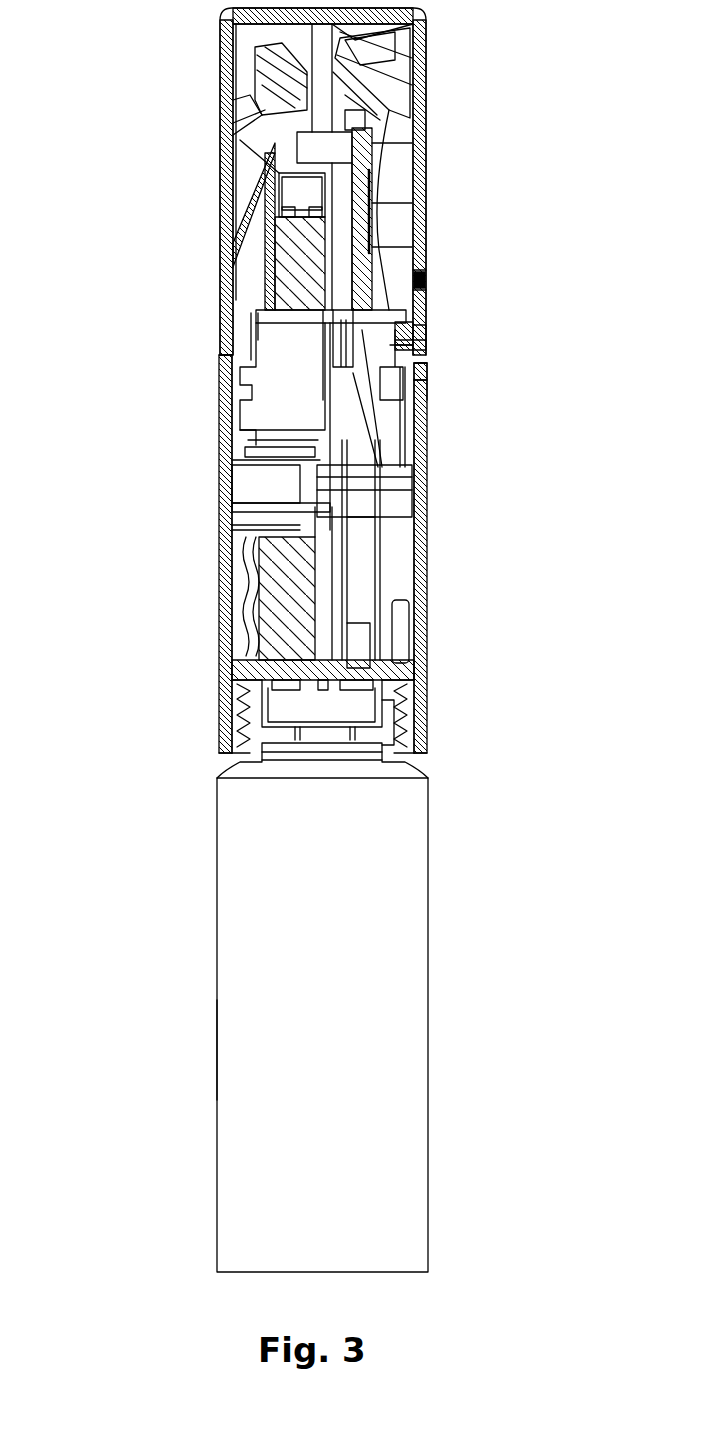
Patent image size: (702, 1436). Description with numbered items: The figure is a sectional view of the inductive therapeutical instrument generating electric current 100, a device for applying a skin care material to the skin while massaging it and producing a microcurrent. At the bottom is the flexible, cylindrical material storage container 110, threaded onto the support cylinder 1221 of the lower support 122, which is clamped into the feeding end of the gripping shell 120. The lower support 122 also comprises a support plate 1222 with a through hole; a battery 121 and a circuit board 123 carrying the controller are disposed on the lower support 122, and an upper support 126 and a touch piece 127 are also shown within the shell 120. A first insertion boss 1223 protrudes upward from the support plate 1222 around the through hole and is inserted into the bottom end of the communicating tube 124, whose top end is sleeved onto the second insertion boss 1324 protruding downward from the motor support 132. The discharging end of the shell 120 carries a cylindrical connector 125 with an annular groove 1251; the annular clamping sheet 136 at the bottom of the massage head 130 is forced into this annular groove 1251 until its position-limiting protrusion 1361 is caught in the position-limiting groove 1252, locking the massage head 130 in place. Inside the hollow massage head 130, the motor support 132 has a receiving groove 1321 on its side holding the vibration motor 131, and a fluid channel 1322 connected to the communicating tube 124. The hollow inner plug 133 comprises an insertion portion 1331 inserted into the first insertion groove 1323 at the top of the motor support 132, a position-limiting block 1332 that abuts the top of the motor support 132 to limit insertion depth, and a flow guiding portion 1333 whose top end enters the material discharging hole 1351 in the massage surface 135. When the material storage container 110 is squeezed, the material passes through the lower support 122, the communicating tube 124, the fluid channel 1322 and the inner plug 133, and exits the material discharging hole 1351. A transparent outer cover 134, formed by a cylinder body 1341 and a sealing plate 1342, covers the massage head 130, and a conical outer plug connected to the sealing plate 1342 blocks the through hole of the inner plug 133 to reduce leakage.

The inductive therapeutical instrument 100 is at (201, 1000).
The material storage container 110 is at (217, 845).
The shell 120 is at (219, 711).
The battery 121 is at (250, 650).
The lower support 122 is at (229, 688).
The support cylinder 1221 is at (412, 718).
The support plate 1222 is at (408, 690).
The first insertion boss 1223 is at (405, 655).
The circuit board 123 is at (306, 572).
The communicating tube 124 is at (384, 540).
The connector 125 is at (217, 353).
The annular groove 1251 is at (428, 390).
The position-limiting groove 1252 is at (430, 362).
The upper support 126 is at (223, 452).
The touch piece 127 is at (218, 603).
The massage head 130 is at (421, 280).
The vibration motor 131 is at (273, 285).
The receiving groove 1321 is at (262, 187).
The motor support 132 is at (375, 200).
The fluid channel 1322 is at (340, 268).
The first insertion groove 1323 is at (375, 155).
The second insertion boss 1324 is at (318, 349).
The inner plug 133 is at (276, 132).
The insertion portion 1331 is at (365, 128).
The position-limiting block 1332 is at (286, 113).
The flow guiding portion 1333 is at (385, 100).
The outer cover 134 is at (219, 190).
The cylinder body 1341 is at (232, 300).
The sealing plate 1342 is at (282, 98).
The massage surface 135 is at (400, 32).
The material discharging hole 1351 is at (400, 70).
The annular clamping sheet 136 is at (417, 330).
The position-limiting protrusion 1361 is at (420, 347).